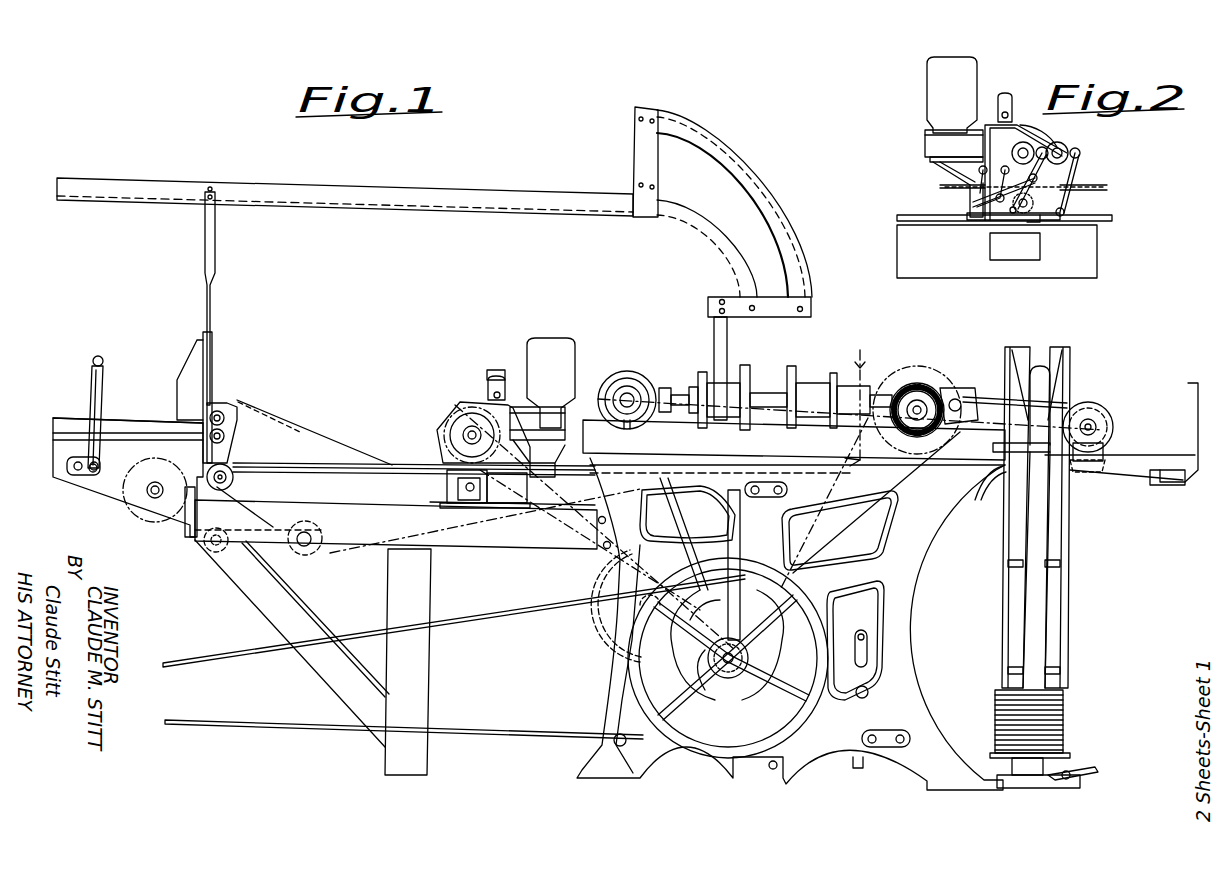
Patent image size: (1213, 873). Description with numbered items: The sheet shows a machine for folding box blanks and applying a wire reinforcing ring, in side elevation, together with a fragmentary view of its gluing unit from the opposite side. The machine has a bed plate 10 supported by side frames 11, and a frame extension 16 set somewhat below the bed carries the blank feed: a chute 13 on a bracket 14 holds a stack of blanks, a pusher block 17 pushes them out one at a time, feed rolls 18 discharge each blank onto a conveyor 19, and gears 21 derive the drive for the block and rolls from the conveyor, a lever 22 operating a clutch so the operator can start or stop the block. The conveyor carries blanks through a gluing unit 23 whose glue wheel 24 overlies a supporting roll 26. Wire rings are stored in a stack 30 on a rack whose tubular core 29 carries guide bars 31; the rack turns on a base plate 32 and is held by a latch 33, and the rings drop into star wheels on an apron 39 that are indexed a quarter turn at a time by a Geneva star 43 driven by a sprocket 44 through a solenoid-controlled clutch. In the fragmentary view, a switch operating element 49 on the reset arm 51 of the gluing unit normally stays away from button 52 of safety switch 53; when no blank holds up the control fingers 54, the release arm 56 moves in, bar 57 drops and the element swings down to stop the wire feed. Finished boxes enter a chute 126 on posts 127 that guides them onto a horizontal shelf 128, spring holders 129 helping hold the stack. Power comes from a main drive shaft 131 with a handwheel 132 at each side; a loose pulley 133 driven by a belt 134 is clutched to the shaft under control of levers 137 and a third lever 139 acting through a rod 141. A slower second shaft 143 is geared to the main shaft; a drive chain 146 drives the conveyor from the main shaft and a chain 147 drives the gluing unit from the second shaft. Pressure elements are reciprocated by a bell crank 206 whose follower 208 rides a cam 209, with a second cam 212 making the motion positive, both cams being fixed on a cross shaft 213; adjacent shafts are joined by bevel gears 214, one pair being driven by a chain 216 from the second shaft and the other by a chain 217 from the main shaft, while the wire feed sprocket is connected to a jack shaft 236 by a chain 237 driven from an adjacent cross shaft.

In FIG. 1, the bed plate 10 is at (985, 490).
In FIG. 1, the side frames 11 is at (930, 540).
In FIG. 1, the chute 13 is at (205, 390).
In FIG. 1, the bracket 14 is at (108, 487).
In FIG. 1, the frame extension 16 is at (510, 556).
In FIG. 2, the frame extension 16 is at (1063, 273).
In FIG. 1, the pusher block 17 is at (70, 420).
In FIG. 1, the feed rolls 18 is at (238, 410).
In FIG. 1, the conveyor 19 is at (263, 540).
In FIG. 2, the conveyor 19 is at (950, 187).
In FIG. 1, the gears 21 is at (160, 452).
In FIG. 1, the lever 22 is at (101, 362).
In FIG. 1, the gluing unit 23 is at (458, 423).
In FIG. 1, the glue wheel 24 is at (476, 403).
In FIG. 2, the glue wheel 24 is at (1035, 130).
In FIG. 1, the supporting roll 26 is at (488, 504).
In FIG. 1, the tubular core 29 is at (1045, 594).
In FIG. 1, the stack 30 is at (1060, 712).
In FIG. 1, the guide bars 31 is at (1068, 533).
In FIG. 1, the base plate 32 is at (1048, 781).
In FIG. 1, the latch 33 is at (1085, 770).
In FIG. 1, the apron 39 is at (1110, 478).
In FIG. 1, the Geneva star 43 is at (1112, 440).
In FIG. 1, the sprocket 44 is at (1100, 412).
In FIG. 2, the switch operating element 49 is at (1013, 212).
In FIG. 2, the reset arm 51 is at (1014, 160).
In FIG. 2, the button 52 is at (1030, 223).
In FIG. 2, the safety switch 53 is at (990, 255).
In FIG. 2, the control fingers 54 is at (1066, 150).
In FIG. 2, the release arm 56 is at (1078, 178).
In FIG. 2, the bar 57 is at (974, 204).
In FIG. 1, the chute 126 is at (774, 211).
In FIG. 1, the posts 127 is at (714, 342).
In FIG. 1, the horizontal shelf 128 is at (355, 200).
In FIG. 1, the spring holders 129 is at (807, 338).
In FIG. 1, the main drive shaft 131 is at (733, 685).
In FIG. 1, the handwheel 132 is at (835, 706).
In FIG. 1, the loose pulley 133 is at (811, 708).
In FIG. 1, the belt 134 is at (503, 613).
In FIG. 1, the levers 137 is at (740, 542).
In FIG. 1, the third lever 139 is at (1194, 395).
In FIG. 1, the rod 141 is at (1150, 486).
In FIG. 1, the second shaft 143 is at (615, 655).
In FIG. 1, the drive chain 146 is at (682, 513).
In FIG. 1, the chain 147 is at (596, 568).
In FIG. 1, the bell crank 206 is at (740, 422).
In FIG. 1, the follower 208 is at (805, 420).
In FIG. 1, the cam 209 is at (800, 375).
In FIG. 1, the cam 212 is at (752, 375).
In FIG. 1, the shaft 213 is at (625, 395).
In FIG. 1, the bevel gears 214 is at (653, 380).
In FIG. 1, the chain 216 is at (650, 452).
In FIG. 1, the chain 217 is at (908, 492).
In FIG. 1, the jack shaft 236 is at (956, 398).
In FIG. 1, the chain 237 is at (1010, 400).